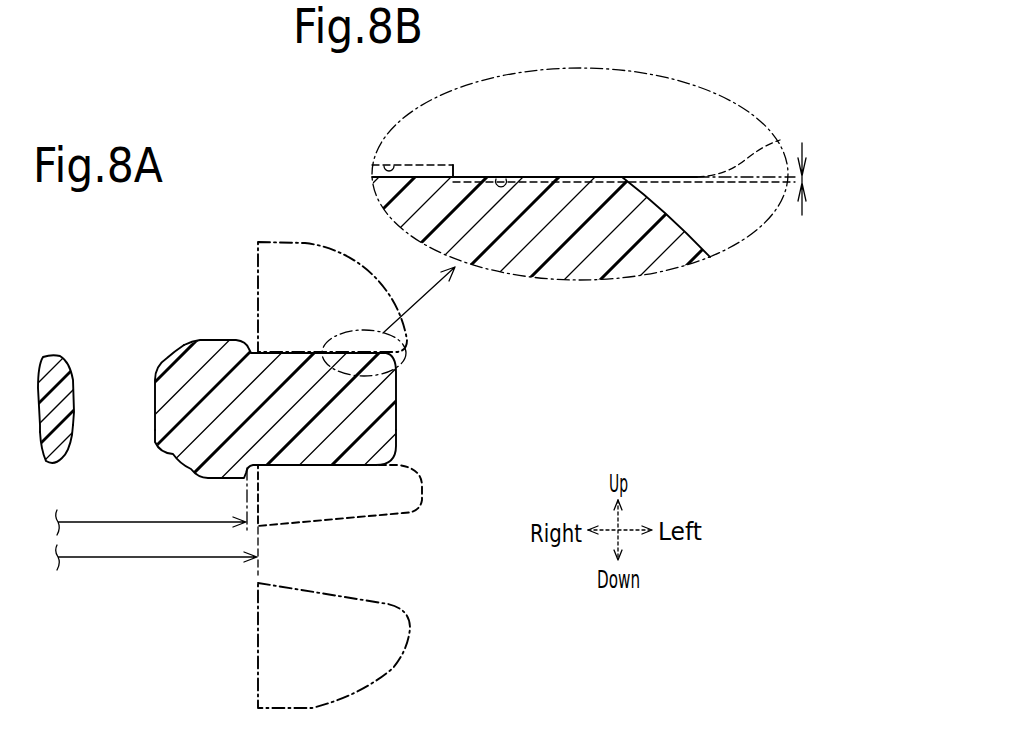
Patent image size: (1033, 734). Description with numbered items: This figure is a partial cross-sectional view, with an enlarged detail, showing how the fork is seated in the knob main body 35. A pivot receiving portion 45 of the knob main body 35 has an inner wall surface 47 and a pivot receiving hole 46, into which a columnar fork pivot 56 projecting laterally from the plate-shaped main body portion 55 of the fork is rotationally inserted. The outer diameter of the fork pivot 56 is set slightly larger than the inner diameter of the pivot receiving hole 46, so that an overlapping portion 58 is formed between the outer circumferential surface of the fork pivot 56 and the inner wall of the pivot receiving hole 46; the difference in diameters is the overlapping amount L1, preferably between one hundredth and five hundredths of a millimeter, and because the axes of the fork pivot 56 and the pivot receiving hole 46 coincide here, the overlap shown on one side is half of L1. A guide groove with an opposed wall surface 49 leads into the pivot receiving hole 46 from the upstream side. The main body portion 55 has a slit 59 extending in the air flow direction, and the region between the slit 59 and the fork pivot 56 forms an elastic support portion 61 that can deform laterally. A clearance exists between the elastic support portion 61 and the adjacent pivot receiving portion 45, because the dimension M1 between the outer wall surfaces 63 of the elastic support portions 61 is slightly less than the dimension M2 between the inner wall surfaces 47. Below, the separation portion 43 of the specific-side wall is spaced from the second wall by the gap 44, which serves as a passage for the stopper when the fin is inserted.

In FIG. 8A, the knob main body 35 is at (291, 435).
In FIG. 8A, the inner wall surface 47 is at (258, 255).
In FIG. 8A, the outer wall surface 63 is at (252, 353).
In FIG. 8A, the fork pivot 56 is at (308, 396).
In FIG. 8B, the fork pivot 56 is at (674, 262).
In FIG. 8A, the elastic support portion 61 is at (165, 454).
In FIG. 8A, the pivot receiving hole 46 is at (393, 465).
In FIG. 8B, the pivot receiving hole 46 is at (501, 178).
In FIG. 8A, the pivot receiving portion 45 is at (407, 333).
In FIG. 8B, the pivot receiving portion 45 is at (780, 140).
In FIG. 8A, the separation portion 43 is at (370, 513).
In FIG. 8A, the gap 44 is at (344, 571).
In FIG. 8A, the main body portion 55 is at (60, 392).
In FIG. 8A, the slit 59 is at (74, 438).
In FIG. 8B, the opposed wall surface 49 is at (395, 166).
In FIG. 8B, the overlapping portion 58 is at (584, 176).
In FIG. 8A, the dimension M1 is at (87, 522).
In FIG. 8A, the dimension M2 is at (87, 557).
In FIG. 8B, the overlapping amount L1 is at (806, 177).